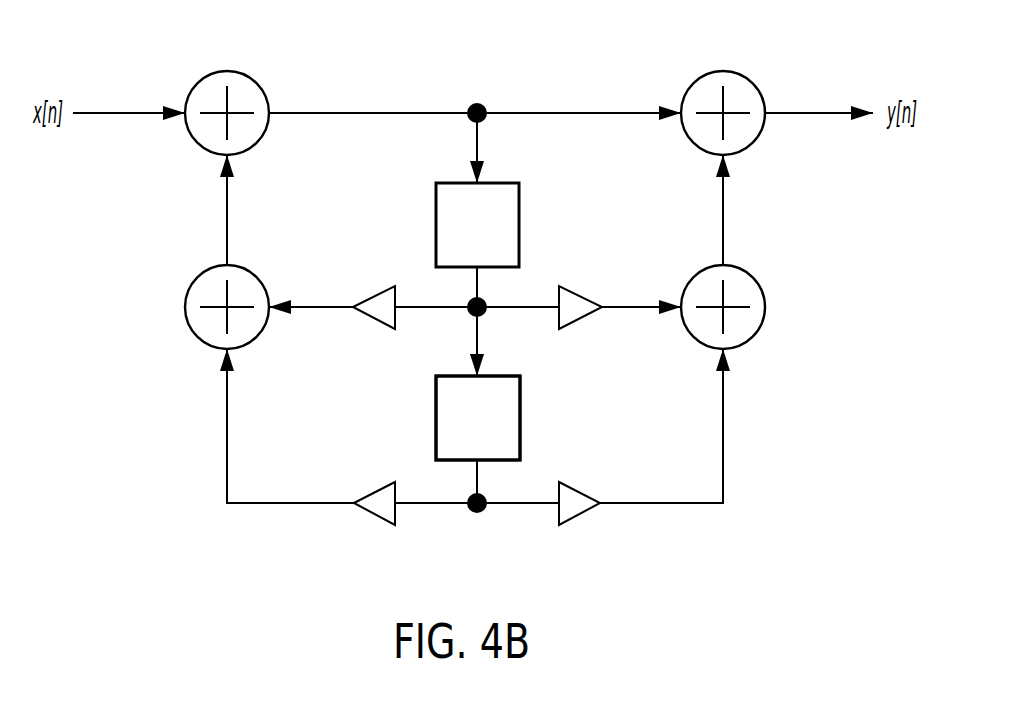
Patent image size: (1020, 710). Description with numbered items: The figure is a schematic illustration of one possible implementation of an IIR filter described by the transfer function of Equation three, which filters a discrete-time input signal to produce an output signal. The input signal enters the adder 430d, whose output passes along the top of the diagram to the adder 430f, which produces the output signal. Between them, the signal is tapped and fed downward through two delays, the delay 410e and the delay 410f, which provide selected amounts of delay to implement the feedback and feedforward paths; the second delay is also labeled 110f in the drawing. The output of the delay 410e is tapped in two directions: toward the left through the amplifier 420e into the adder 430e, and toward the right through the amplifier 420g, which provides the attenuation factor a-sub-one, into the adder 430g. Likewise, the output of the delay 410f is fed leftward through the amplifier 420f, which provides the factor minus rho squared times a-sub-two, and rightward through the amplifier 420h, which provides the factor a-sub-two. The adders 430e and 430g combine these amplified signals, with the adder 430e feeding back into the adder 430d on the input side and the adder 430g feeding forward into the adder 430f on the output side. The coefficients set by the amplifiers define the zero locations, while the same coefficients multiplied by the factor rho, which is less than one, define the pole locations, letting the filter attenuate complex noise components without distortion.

The adder 430d is at (247, 73).
The adder 430e is at (186, 310).
The adder 430f is at (743, 72).
The adder 430g is at (765, 307).
The delay 410e is at (521, 192).
The delay 410f is at (520, 394).
The delay element 110f is at (435, 407).
The amplifier 420e is at (373, 292).
The amplifier 420f is at (373, 490).
The amplifier 420g is at (566, 287).
The amplifier 420h is at (568, 487).